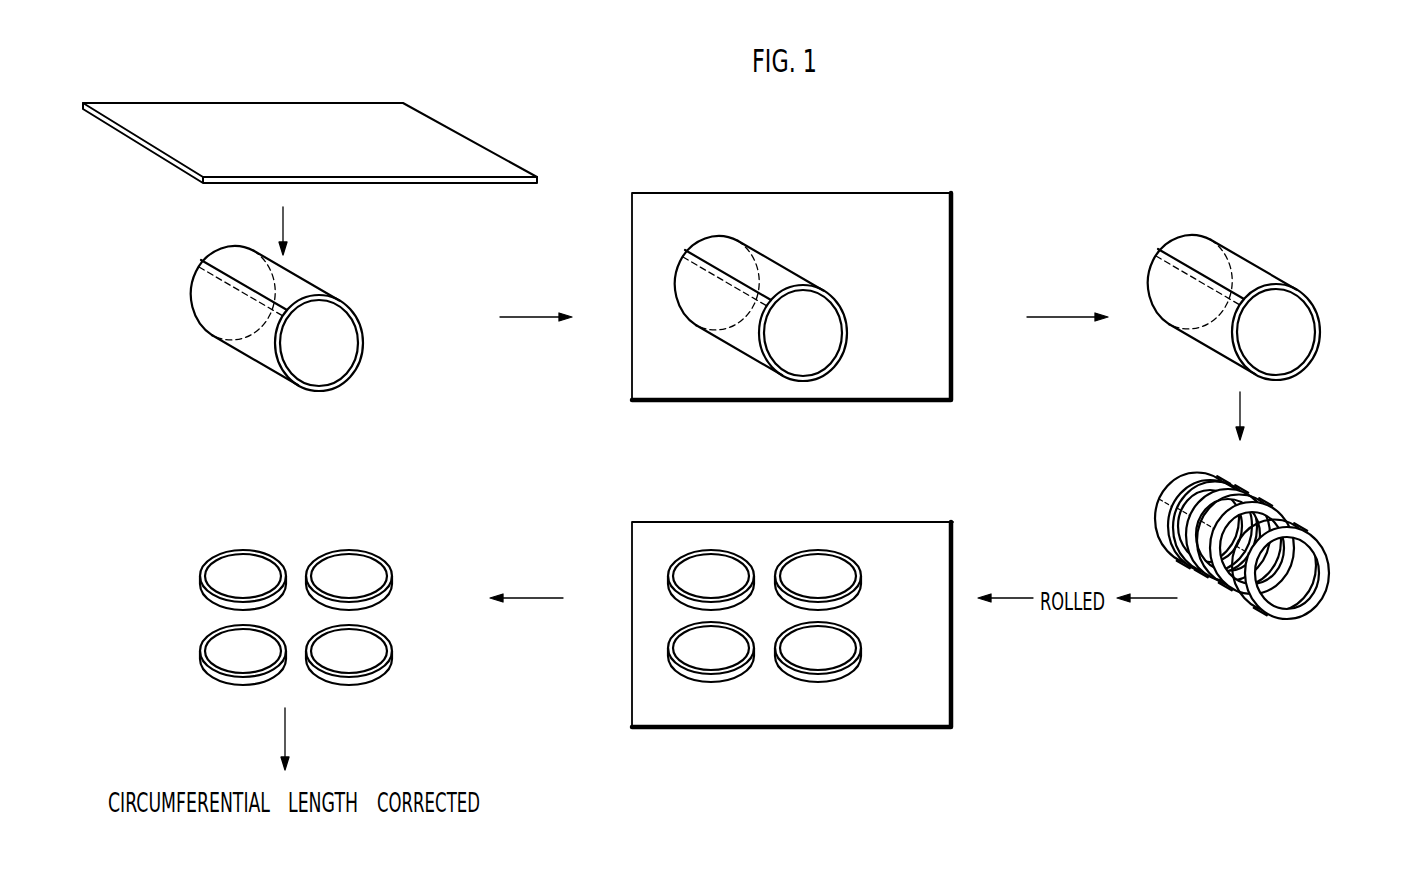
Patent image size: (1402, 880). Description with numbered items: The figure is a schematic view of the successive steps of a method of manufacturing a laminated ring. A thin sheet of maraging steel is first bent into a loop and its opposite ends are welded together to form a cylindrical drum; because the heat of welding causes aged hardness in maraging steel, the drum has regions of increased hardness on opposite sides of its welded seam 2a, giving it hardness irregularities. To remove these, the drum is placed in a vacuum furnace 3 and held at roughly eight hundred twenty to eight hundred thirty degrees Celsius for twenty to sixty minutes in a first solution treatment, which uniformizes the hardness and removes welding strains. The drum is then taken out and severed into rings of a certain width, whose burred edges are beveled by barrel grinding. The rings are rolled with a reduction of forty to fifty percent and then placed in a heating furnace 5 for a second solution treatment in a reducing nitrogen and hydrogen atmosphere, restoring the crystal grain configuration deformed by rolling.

The welded seam 2a is at (214, 331).
The vacuum furnace 3 is at (952, 222).
The heating furnace 5 is at (953, 698).